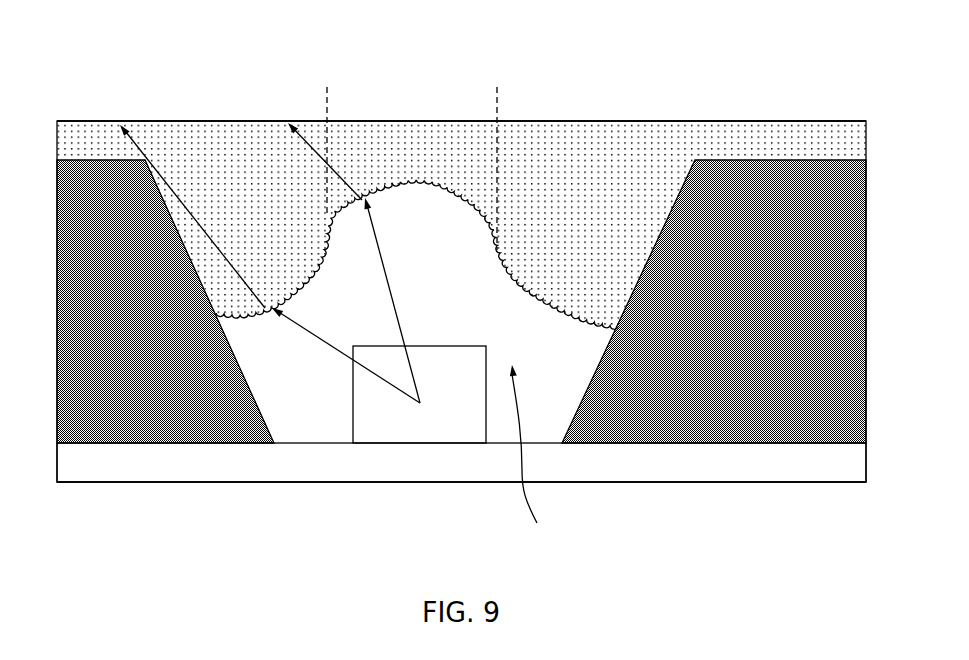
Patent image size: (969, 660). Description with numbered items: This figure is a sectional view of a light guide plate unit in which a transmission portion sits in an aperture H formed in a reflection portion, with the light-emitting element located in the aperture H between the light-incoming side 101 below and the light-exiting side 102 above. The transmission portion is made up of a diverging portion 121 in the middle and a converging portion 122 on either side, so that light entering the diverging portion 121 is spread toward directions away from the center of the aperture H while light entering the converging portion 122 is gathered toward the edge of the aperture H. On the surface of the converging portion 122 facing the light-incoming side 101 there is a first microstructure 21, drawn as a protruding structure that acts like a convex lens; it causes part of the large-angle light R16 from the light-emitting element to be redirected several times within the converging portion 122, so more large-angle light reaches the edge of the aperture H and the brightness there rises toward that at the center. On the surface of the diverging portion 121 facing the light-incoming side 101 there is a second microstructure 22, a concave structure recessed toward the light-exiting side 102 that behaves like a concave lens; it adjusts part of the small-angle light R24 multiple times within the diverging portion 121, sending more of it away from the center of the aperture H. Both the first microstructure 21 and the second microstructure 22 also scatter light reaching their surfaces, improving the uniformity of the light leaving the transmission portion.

The diverging portion 121 is at (410, 168).
The converging portion 122 is at (272, 287).
The second microstructure 22 is at (425, 183).
The light-exiting side 102 is at (740, 93).
The light-incoming side 101 is at (757, 526).
The first microstructure 21 is at (252, 443).
The small-angle light R24 is at (390, 300).
The large-angle light R16 is at (346, 355).
The aperture H is at (529, 460).